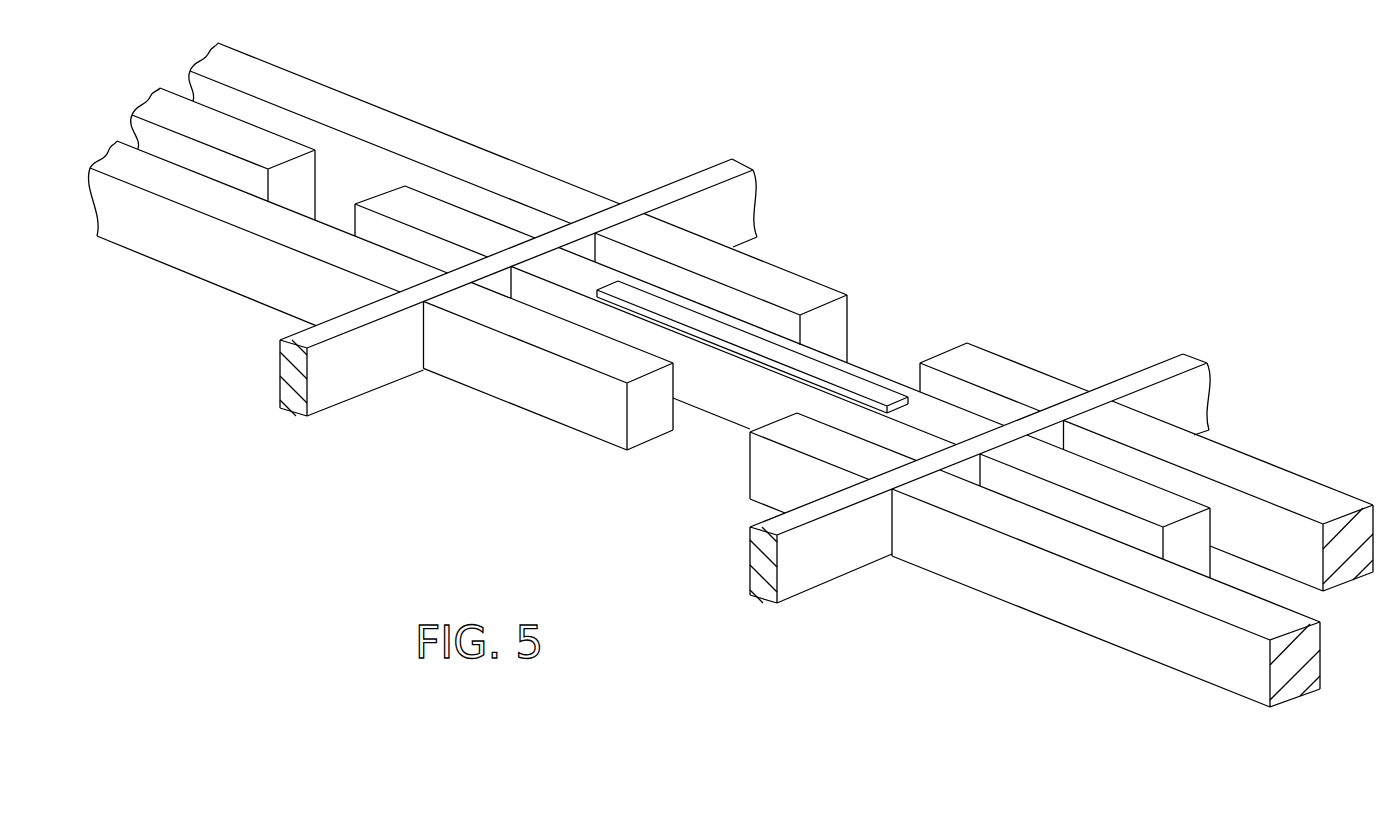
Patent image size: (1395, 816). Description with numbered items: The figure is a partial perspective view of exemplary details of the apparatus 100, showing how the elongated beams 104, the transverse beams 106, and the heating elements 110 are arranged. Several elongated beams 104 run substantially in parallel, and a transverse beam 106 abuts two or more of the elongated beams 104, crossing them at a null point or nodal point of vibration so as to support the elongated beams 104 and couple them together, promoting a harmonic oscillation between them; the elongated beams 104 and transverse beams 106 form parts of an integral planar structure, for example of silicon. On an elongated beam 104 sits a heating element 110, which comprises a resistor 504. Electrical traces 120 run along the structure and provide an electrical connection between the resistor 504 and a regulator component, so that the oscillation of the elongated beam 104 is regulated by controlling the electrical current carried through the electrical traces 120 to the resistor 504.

The apparatus 100 is at (730, 375).
The elongated beam 104 is at (721, 388).
The transverse beam 106 is at (840, 553).
The heating element 110 is at (890, 388).
The electrical trace 120 is at (212, 376).
The resistor 504 is at (845, 383).